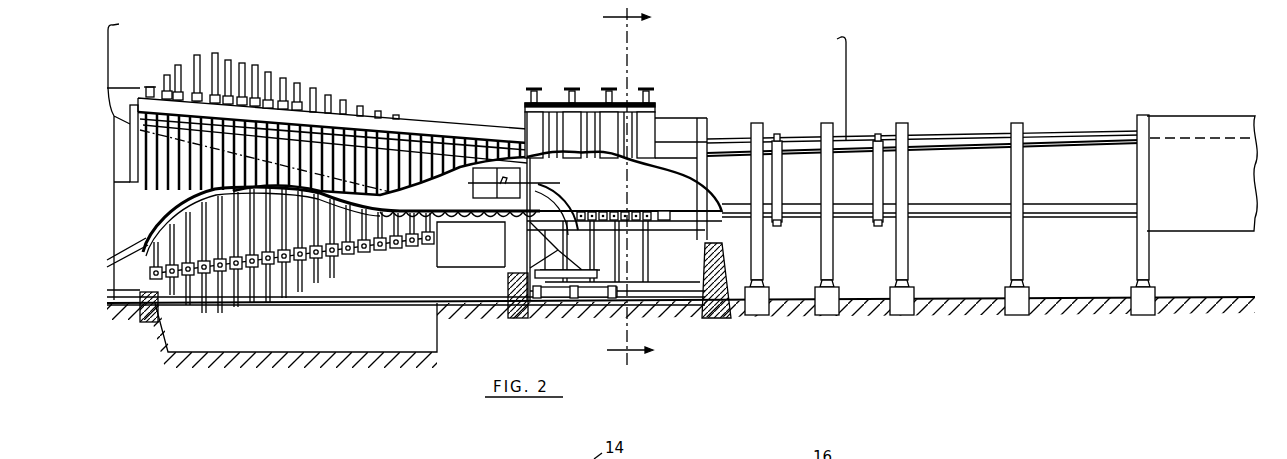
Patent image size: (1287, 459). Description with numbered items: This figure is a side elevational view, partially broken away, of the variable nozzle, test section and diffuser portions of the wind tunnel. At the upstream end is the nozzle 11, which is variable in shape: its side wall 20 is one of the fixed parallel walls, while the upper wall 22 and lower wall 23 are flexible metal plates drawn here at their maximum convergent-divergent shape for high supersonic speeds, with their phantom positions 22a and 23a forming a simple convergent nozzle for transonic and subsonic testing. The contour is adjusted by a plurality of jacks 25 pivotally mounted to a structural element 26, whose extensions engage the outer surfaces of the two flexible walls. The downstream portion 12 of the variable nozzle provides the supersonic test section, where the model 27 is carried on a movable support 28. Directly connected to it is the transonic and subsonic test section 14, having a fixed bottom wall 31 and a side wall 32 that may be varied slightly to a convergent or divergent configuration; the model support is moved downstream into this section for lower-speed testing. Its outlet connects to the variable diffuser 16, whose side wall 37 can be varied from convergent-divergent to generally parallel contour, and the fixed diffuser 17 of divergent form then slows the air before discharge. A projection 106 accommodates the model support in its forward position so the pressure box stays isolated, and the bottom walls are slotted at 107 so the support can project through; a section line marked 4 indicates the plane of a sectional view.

The section line 4- 4 is at (670, 23).
The nozzle 11 is at (349, 77).
The downstream portion of the variable nozzle 12 is at (480, 111).
The transonic and subsonic test section 14 is at (574, 76).
The variable diffuser 16 is at (729, 128).
The fixed diffuser 17 is at (1189, 105).
The side wall 20 is at (148, 213).
The upper wall 22 is at (420, 157).
The upper wall (phantom position) 22a is at (373, 152).
The lower wall 23 is at (480, 221).
The lower wall (phantom position) 23a is at (345, 200).
The jacks 25 is at (270, 72).
The structural element 26 is at (360, 247).
The model 27 is at (492, 175).
The movable support 28 is at (562, 183).
The bottom wall 31 is at (647, 209).
The side wall 32 is at (624, 190).
The side wall 37 is at (618, 208).
The projection 106 is at (437, 268).
The slot 107 is at (588, 210).